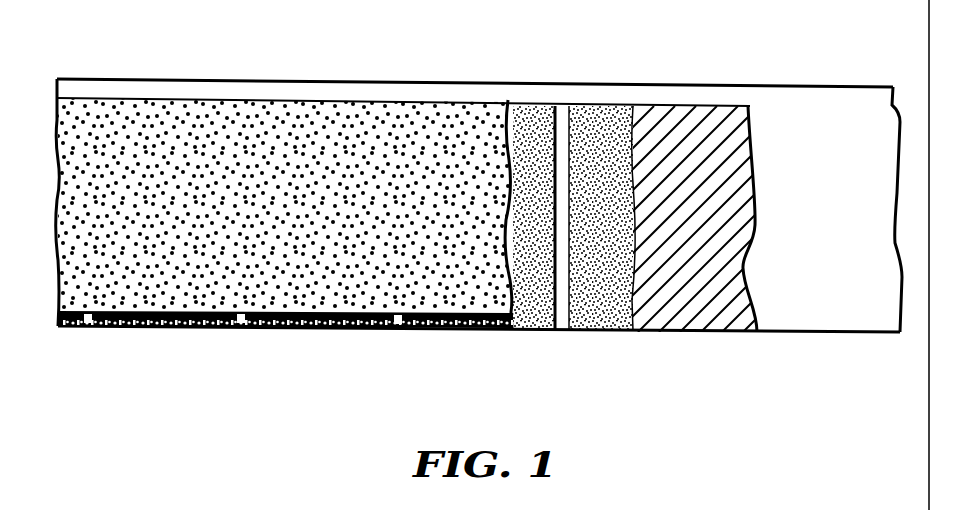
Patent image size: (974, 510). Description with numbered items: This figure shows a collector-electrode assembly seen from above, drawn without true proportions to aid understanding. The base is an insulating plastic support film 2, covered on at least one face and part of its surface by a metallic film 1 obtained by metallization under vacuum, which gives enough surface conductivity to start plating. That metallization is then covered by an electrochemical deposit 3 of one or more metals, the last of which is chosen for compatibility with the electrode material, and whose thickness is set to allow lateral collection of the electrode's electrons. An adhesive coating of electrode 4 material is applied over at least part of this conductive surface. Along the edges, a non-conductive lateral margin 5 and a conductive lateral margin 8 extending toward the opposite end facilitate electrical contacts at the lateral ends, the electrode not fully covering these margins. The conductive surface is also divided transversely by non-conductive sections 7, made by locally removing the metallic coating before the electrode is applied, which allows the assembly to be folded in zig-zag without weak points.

The metallic film 1 is at (705, 305).
The insulating plastic support film 2 is at (827, 303).
The electrochemical deposit 3 is at (583, 107).
The electrode 4 is at (468, 300).
The non-conductive lateral margin 5 is at (432, 90).
The non-conductive sections 7 is at (398, 329).
The conductive lateral margin 8 is at (265, 328).